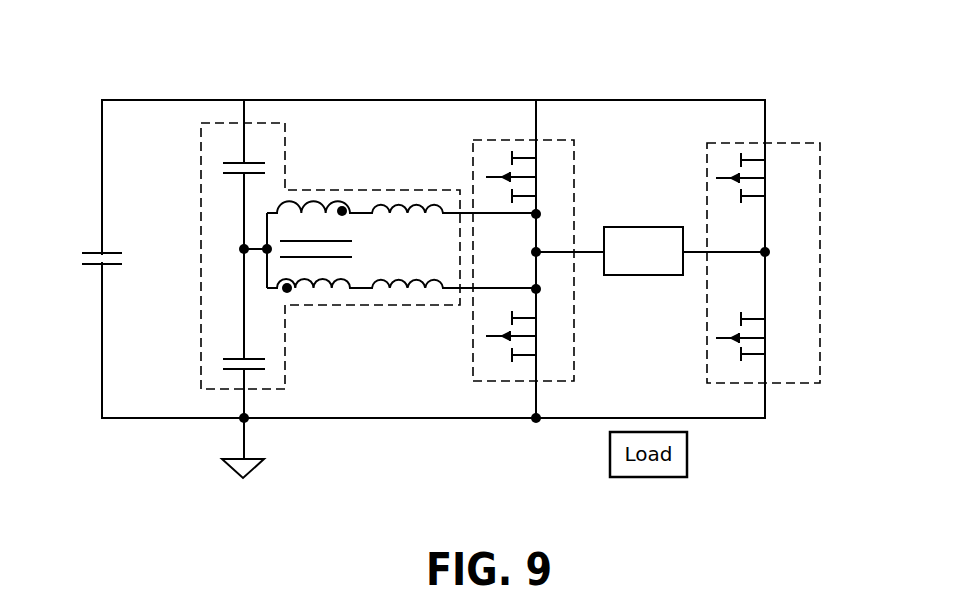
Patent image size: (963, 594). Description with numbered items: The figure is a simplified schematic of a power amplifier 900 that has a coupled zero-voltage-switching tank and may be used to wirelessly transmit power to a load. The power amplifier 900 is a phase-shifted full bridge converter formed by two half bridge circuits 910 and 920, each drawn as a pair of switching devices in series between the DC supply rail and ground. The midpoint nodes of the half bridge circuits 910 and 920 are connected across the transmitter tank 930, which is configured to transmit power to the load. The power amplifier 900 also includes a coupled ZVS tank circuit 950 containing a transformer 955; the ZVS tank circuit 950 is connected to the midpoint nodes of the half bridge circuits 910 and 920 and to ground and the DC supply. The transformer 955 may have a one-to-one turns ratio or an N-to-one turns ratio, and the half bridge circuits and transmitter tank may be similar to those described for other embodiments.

The power amplifier 900 is at (762, 51).
The half bridge circuit 910 is at (822, 176).
The half bridge circuit 920 is at (550, 162).
The transmitter tank 930 is at (615, 277).
The coupled ZVS tank circuit 950 is at (200, 308).
The transformer 955 is at (267, 222).